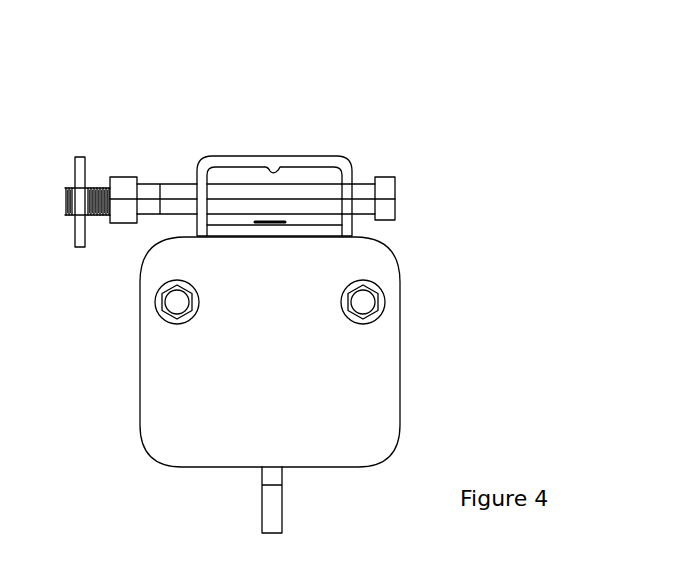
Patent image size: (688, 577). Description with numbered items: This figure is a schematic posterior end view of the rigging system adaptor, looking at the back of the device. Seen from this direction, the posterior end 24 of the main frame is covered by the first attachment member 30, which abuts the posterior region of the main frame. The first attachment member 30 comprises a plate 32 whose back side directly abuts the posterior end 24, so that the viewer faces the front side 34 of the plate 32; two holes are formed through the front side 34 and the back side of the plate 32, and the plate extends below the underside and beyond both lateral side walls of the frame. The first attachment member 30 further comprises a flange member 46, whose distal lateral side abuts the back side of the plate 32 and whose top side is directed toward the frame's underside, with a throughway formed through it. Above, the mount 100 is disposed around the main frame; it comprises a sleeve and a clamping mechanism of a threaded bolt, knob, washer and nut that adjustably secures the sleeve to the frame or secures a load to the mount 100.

The mount 100 is at (262, 119).
The posterior end 24 is at (357, 145).
The first attachment member 30 is at (312, 348).
The plate 32 is at (307, 352).
The front side 34 is at (387, 350).
The flange member 46 is at (302, 527).